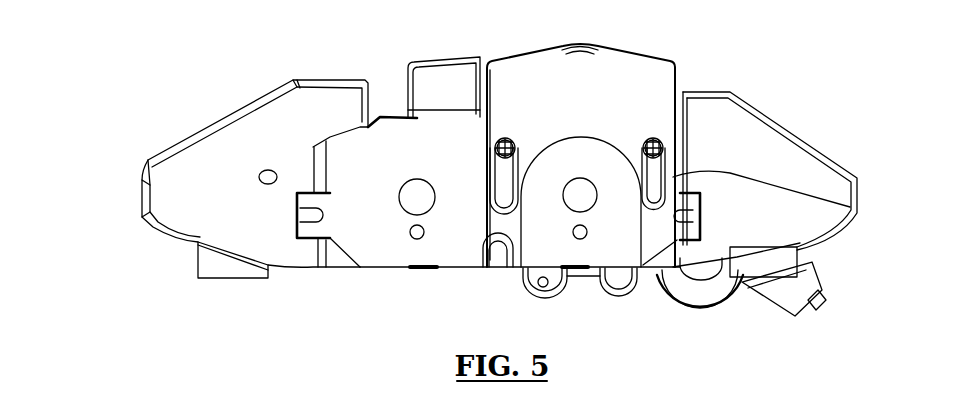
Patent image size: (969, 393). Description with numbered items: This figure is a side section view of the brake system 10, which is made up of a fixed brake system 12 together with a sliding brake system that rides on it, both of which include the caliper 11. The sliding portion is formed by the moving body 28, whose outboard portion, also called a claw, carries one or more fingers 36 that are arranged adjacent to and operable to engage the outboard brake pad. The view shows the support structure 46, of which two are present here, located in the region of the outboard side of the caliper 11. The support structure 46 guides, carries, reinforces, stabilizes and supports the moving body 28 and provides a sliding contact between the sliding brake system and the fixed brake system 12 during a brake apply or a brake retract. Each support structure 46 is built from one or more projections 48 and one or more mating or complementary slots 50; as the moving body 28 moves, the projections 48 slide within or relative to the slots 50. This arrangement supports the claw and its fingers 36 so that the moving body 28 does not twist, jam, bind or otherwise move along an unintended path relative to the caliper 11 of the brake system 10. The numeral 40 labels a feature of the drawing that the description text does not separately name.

The brake system 10 is at (222, 97).
The caliper 11 is at (148, 232).
The fixed brake system 12 is at (150, 165).
The moving body 28 is at (640, 36).
The fingers 36 is at (855, 218).
The mounting tab 40 is at (366, 133).
The support structure 46 is at (510, 133).
The projections 48 is at (663, 145).
The slots 50 is at (565, 268).